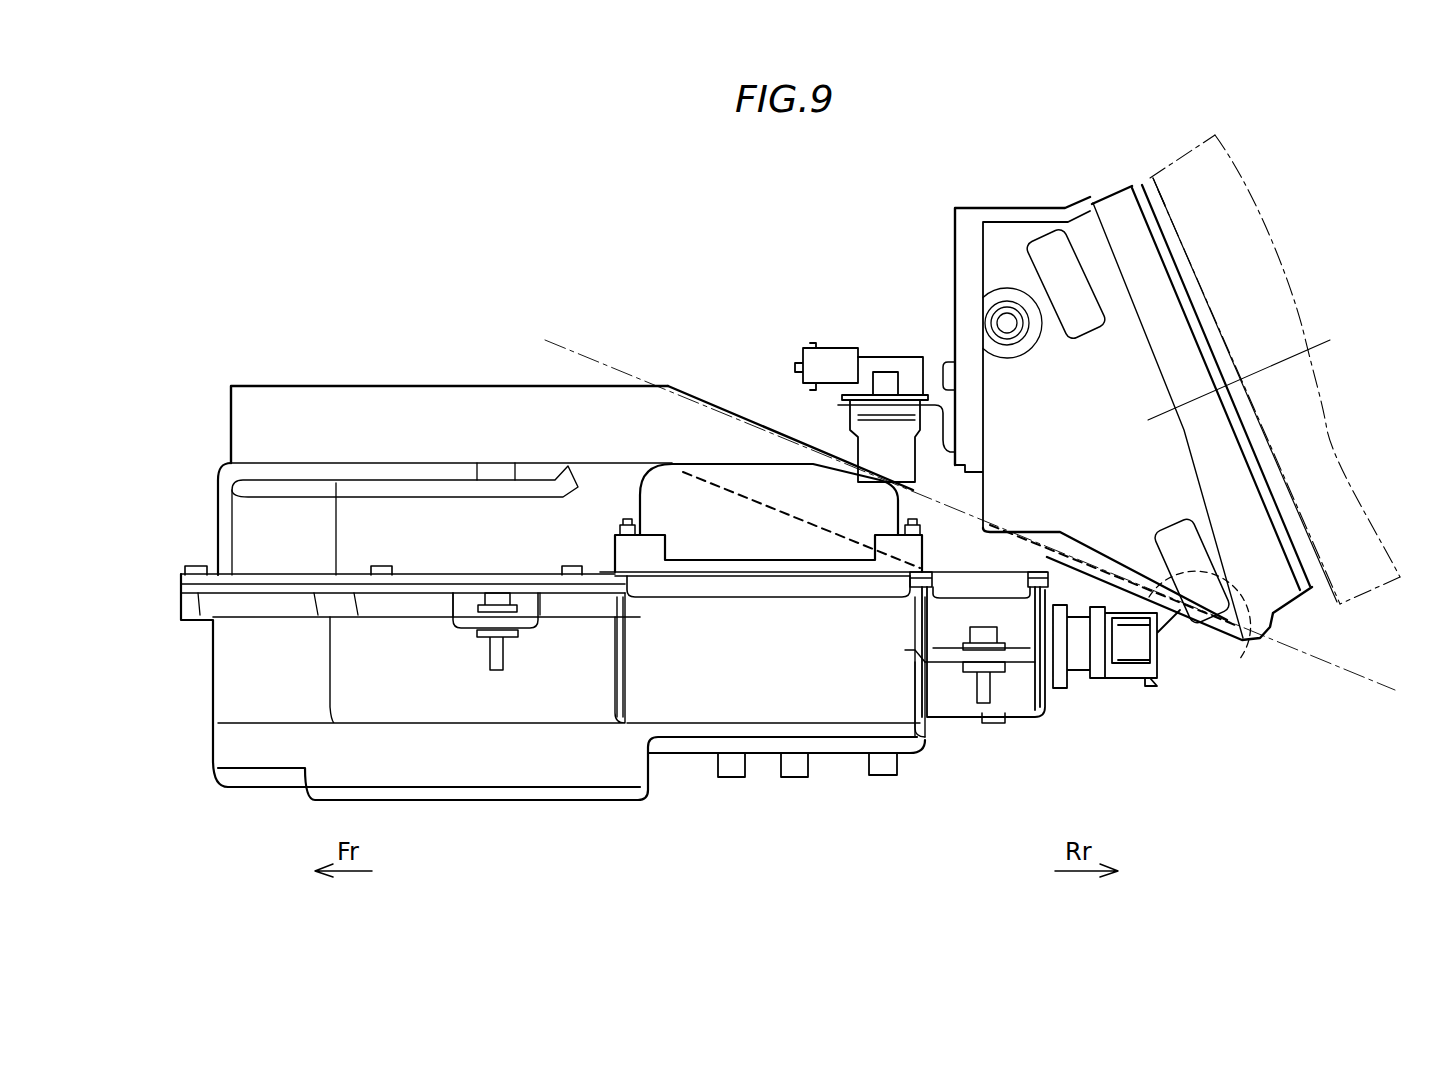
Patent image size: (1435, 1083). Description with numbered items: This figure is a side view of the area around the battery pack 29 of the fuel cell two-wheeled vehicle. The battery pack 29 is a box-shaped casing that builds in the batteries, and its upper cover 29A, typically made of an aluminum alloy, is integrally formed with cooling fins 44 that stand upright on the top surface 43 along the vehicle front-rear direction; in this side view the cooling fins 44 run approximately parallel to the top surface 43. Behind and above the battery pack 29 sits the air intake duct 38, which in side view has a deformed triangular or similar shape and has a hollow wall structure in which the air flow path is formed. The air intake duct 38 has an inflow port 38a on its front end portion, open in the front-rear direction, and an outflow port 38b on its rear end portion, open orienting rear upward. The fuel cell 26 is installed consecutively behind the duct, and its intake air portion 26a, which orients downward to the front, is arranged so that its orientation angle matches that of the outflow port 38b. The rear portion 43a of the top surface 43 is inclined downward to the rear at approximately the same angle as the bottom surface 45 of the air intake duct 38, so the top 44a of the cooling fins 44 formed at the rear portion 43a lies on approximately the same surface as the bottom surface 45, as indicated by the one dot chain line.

The fuel cell 26 is at (1172, 170).
The intake air portion 26a is at (1159, 191).
The battery pack 29 is at (257, 692).
The upper cover 29A is at (267, 527).
The air intake duct 38 is at (1010, 242).
The inflow port 38a is at (972, 312).
The outflow port 38b is at (1170, 258).
The top surface 43 is at (523, 462).
The rear portion 43a is at (748, 490).
The cooling fins 44 is at (347, 385).
The top 44a is at (737, 465).
The bottom surface 45 is at (1239, 660).